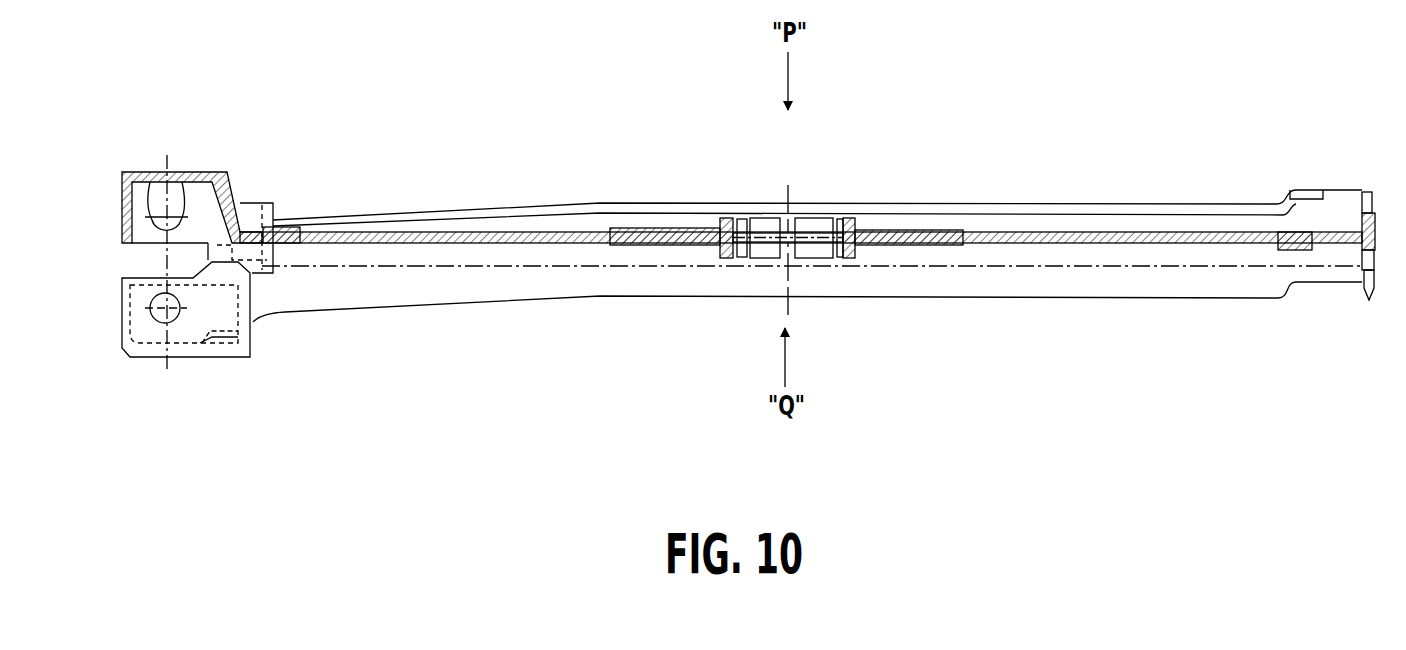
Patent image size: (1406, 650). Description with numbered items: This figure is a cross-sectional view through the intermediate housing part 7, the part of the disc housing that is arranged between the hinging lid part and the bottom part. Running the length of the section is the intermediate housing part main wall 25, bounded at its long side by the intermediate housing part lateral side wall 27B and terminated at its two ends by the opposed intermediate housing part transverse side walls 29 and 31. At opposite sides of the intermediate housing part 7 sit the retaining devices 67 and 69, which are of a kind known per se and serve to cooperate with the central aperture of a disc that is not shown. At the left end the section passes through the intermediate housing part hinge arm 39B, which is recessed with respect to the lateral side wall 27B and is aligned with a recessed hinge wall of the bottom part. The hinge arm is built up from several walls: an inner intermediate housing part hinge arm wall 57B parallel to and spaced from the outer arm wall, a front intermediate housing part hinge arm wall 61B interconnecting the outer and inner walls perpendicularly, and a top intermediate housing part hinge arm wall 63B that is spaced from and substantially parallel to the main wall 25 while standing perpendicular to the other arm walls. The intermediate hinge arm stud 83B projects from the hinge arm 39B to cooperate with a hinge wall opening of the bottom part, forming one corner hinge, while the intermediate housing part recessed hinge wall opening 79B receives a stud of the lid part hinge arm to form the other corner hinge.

The intermediate housing part 7 is at (952, 155).
The intermediate housing part main wall 25 is at (514, 237).
The intermediate housing part lateral side wall 27B is at (505, 287).
The intermediate housing part transverse side wall 29 is at (1374, 212).
The intermediate housing part transverse side wall 31 is at (122, 210).
The intermediate housing part hinge arm 39B is at (130, 358).
The inner intermediate housing part hinge arm wall 57B is at (138, 328).
The front intermediate housing part hinge arm wall 61B is at (250, 323).
The top intermediate housing part hinge arm wall 63B is at (175, 362).
The retaining device 67 is at (816, 217).
The retaining device 69 is at (817, 259).
The intermediate housing part recessed hinge wall opening 79B is at (170, 202).
The intermediate hinge arm stud 83B is at (152, 308).